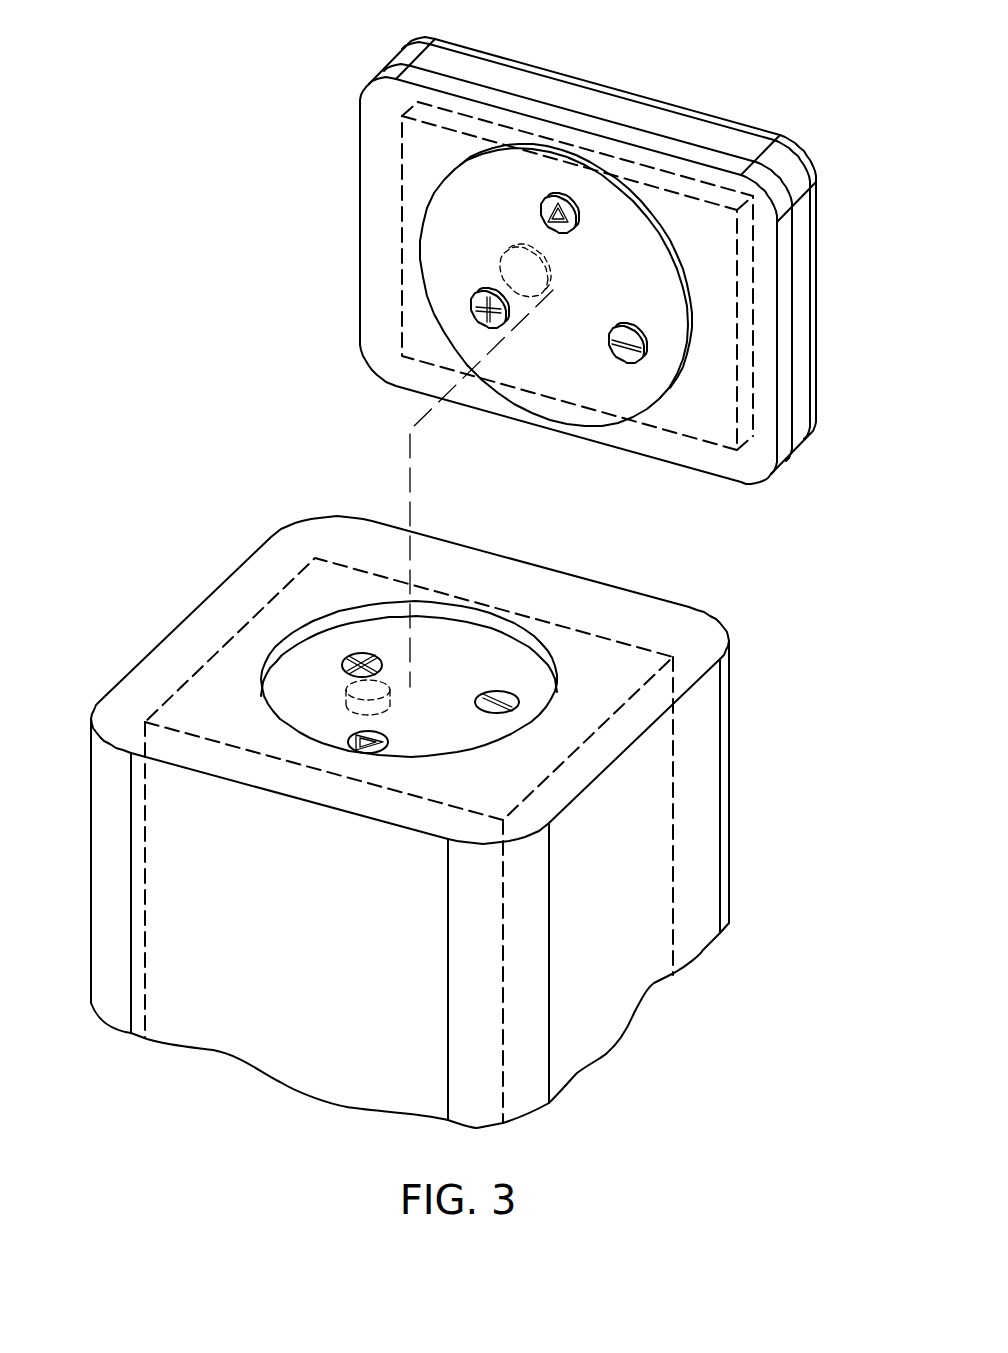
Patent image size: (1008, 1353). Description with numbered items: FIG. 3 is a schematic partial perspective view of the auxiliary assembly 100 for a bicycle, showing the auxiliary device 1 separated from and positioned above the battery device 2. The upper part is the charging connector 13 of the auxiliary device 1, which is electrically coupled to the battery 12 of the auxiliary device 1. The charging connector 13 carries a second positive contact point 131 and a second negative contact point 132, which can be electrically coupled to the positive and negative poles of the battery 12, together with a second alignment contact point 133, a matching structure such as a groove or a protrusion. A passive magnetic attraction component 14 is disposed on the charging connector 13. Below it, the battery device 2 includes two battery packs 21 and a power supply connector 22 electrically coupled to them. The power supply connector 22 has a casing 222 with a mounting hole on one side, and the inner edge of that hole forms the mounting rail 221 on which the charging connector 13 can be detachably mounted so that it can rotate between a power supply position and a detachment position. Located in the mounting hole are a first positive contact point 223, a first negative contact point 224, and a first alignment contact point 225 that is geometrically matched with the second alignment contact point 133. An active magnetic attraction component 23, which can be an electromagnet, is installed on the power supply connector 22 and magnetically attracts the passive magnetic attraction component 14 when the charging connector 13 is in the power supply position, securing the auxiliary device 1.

The auxiliary assembly 100 is at (166, 70).
The auxiliary device 1 is at (830, 278).
The battery 12 is at (762, 379).
The charging connector 13 is at (445, 199).
The second positive contact point 131 is at (478, 318).
The second negative contact point 132 is at (628, 353).
The second alignment contact point 133 is at (553, 203).
The passive magnetic attraction component 14 is at (490, 258).
The battery device 2 is at (745, 793).
The battery pack 21 is at (680, 880).
The power supply connector 22 is at (183, 618).
The mounting rail 221 is at (468, 620).
The casing 222 is at (150, 680).
The first positive contact point 223 is at (358, 653).
The first negative contact point 224 is at (503, 693).
The first alignment contact point 225 is at (352, 742).
The active magnetic attraction component 23 is at (340, 710).